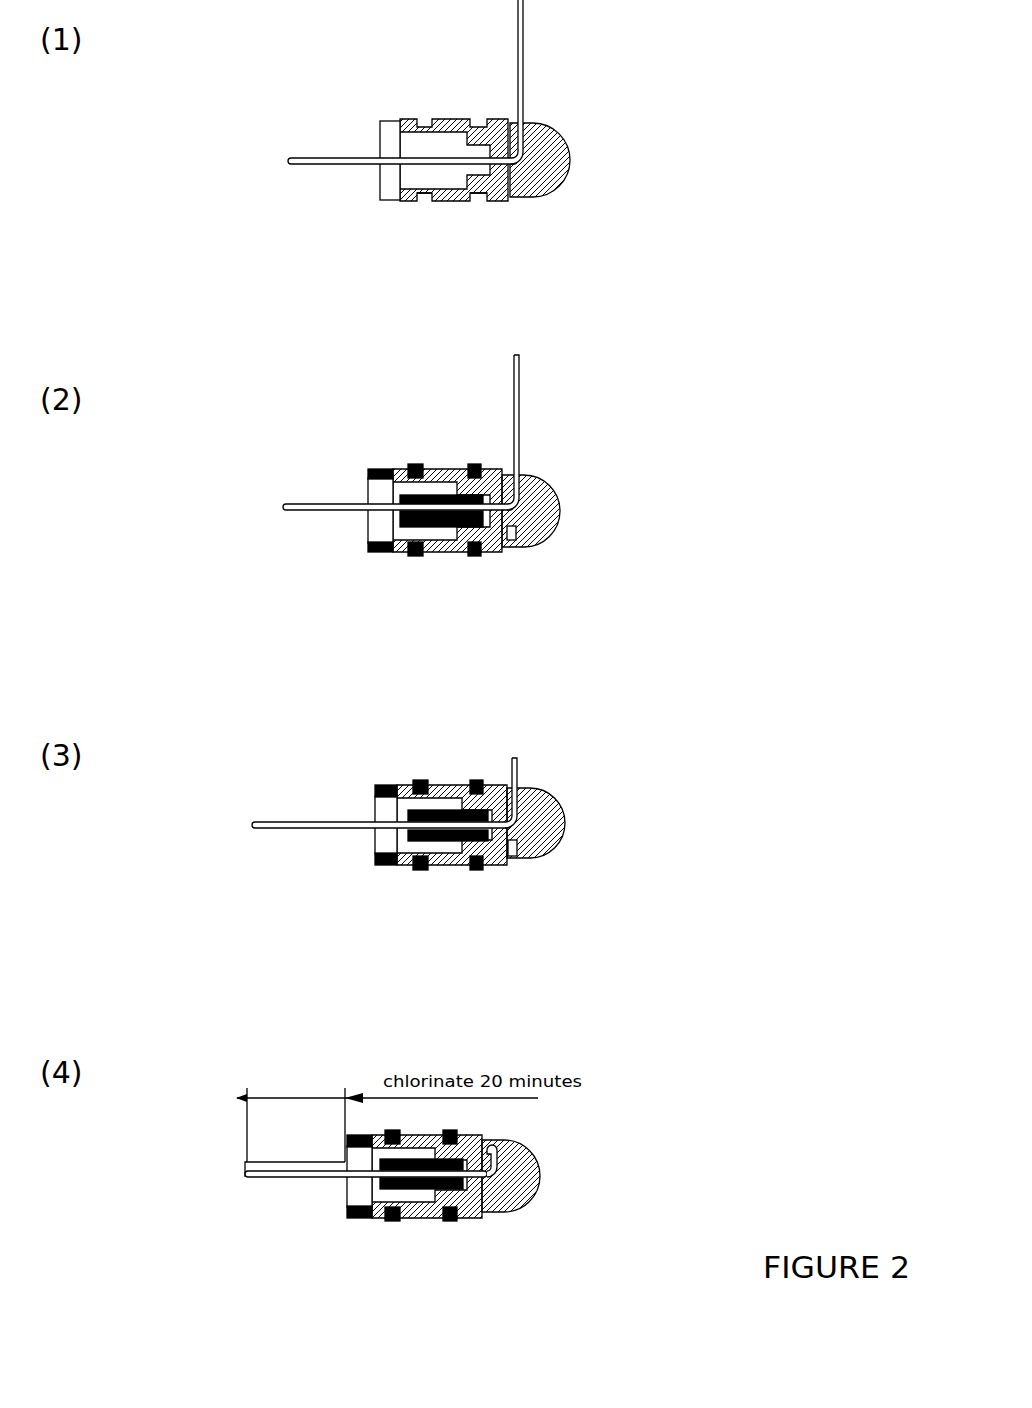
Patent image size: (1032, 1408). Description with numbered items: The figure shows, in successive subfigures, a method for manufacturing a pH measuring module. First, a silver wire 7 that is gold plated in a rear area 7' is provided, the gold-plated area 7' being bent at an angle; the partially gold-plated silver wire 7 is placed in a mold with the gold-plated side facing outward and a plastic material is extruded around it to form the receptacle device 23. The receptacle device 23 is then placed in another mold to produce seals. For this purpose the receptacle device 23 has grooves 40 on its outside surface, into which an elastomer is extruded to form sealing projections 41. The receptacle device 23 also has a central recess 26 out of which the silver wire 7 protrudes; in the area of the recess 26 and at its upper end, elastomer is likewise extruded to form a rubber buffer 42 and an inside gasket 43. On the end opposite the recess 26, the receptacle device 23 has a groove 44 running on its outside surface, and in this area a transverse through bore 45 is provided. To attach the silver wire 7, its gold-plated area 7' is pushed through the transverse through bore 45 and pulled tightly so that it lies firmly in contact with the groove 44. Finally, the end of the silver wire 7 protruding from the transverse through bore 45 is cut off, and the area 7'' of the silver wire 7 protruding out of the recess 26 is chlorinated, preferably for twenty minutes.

The silver wire 7 is at (381, 680).
The gold-plated area 7' is at (574, 596).
The protruding area of silver wire 7'' is at (295, 1239).
The receptacle device 23 is at (472, 128).
The central recess 26 is at (372, 184).
The grooves 40 is at (478, 201).
The sealing projections 41 is at (470, 552).
The rubber buffer 42 is at (413, 497).
The inside gasket 43 is at (373, 472).
The groove 44 is at (555, 508).
The transverse through bore 45 is at (513, 530).